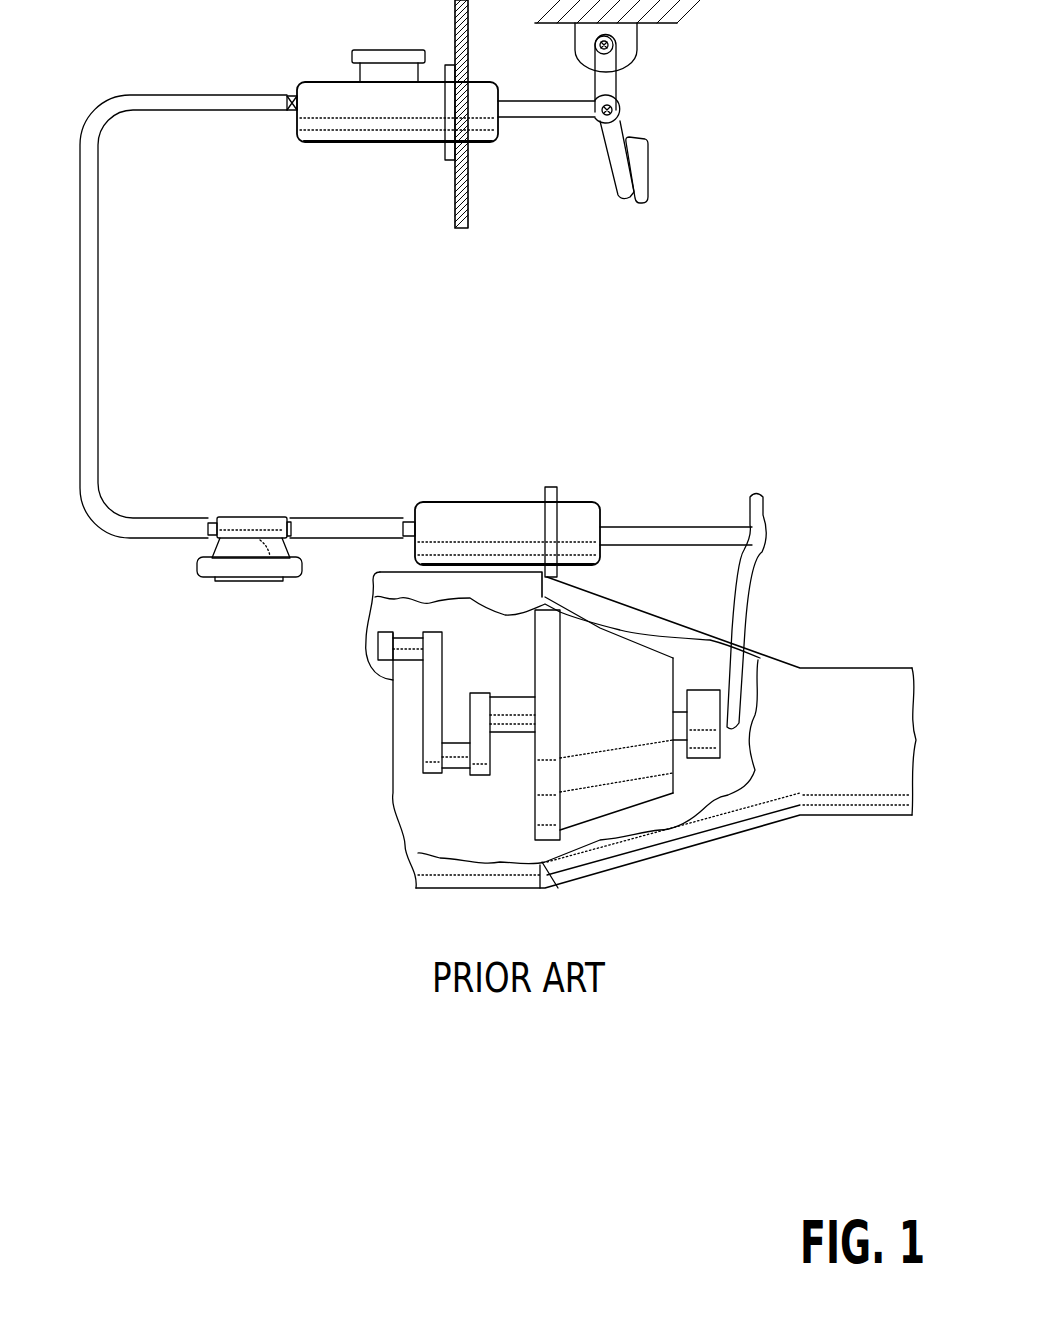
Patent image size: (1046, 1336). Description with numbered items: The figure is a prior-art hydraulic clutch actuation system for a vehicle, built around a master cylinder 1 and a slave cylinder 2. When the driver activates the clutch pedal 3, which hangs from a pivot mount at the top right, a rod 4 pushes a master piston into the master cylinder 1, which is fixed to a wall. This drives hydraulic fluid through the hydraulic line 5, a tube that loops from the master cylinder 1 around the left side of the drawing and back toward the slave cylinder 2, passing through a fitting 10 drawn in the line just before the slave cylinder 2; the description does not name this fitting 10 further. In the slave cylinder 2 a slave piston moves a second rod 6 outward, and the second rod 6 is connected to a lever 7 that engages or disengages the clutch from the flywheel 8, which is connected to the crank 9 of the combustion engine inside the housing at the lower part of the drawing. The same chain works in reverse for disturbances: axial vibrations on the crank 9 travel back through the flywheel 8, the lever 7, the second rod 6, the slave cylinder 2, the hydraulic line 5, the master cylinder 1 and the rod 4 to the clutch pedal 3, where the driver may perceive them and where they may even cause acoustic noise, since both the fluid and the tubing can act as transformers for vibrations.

The master cylinder 1 is at (333, 130).
The slave cylinder 2 is at (448, 518).
The clutch pedal 3 is at (638, 178).
The rod 4 is at (565, 115).
The hydraulic line 5 is at (90, 265).
The second rod 6 is at (638, 533).
The lever 7 is at (745, 623).
The flywheel 8 is at (588, 787).
The crank 9 is at (423, 760).
The line connector 10 is at (247, 525).